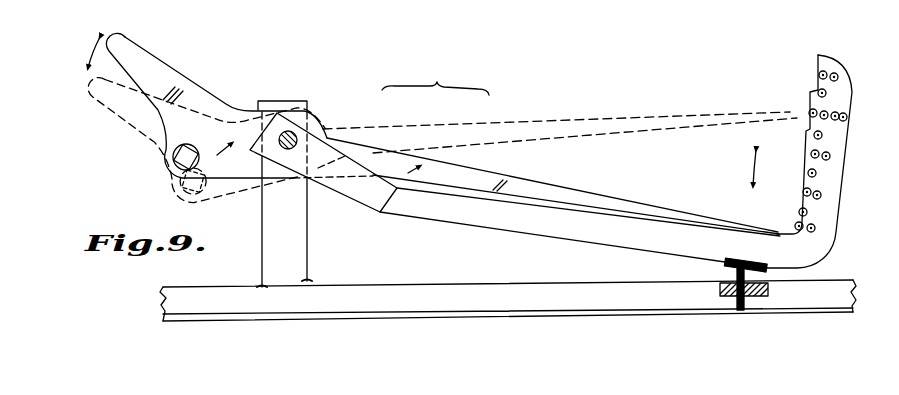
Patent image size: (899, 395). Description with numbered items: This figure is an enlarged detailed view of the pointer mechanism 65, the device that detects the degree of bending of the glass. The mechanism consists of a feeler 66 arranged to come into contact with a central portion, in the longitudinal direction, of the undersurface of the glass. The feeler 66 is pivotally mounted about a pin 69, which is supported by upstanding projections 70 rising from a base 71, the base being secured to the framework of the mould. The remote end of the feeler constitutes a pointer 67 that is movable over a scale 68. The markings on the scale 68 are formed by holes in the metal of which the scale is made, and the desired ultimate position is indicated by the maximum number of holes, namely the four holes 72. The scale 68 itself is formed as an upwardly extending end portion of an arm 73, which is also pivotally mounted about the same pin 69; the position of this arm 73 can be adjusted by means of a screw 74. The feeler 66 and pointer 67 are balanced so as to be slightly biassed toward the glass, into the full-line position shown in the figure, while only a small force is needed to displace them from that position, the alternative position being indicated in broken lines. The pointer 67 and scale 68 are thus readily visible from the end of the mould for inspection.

The pointer mechanism 65 is at (560, 110).
The feeler 66 is at (160, 75).
The pointer 67 is at (604, 202).
The scale 68 is at (838, 194).
The pin 69 is at (289, 138).
The upstanding projections 70 is at (303, 236).
The base 71 is at (599, 302).
The holes 72 is at (827, 113).
The arm 73 is at (541, 227).
The screw 74 is at (726, 264).